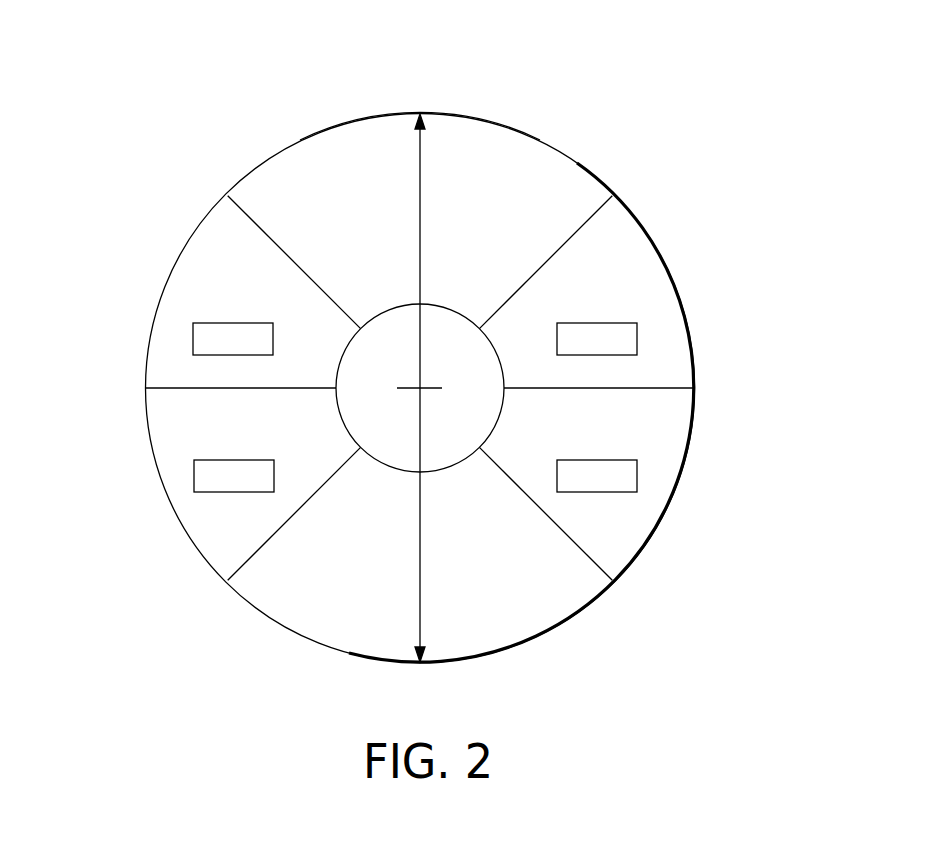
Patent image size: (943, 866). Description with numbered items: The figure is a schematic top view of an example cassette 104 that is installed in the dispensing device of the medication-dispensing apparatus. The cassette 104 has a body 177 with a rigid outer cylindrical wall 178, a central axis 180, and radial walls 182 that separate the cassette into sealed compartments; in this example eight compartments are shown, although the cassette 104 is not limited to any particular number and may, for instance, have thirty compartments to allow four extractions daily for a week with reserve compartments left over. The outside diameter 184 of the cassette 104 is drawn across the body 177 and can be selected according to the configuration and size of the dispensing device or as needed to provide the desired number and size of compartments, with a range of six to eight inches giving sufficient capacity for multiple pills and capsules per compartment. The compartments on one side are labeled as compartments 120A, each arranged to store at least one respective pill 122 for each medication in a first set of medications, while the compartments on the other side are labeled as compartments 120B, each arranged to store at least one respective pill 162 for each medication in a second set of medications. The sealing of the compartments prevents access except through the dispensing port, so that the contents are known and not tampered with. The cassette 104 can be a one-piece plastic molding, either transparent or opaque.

The cassette 104 is at (517, 79).
The body 177 is at (366, 116).
The radial walls 182 is at (255, 218).
The rigid outer cylindrical wall 178 is at (253, 610).
The outside diameter 184 is at (420, 590).
The central axis 180 is at (420, 388).
The compartment 120A is at (256, 305).
The compartment 120B is at (620, 305).
The pill 122 is at (193, 338).
The pill 162 is at (637, 337).